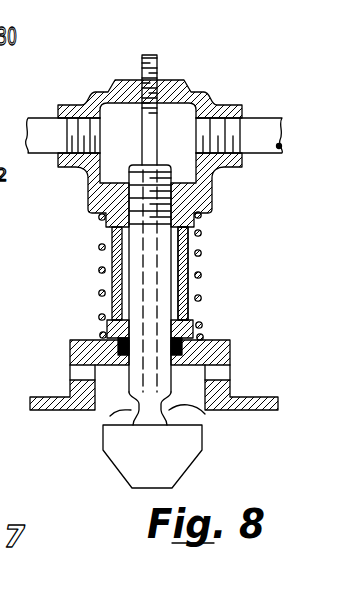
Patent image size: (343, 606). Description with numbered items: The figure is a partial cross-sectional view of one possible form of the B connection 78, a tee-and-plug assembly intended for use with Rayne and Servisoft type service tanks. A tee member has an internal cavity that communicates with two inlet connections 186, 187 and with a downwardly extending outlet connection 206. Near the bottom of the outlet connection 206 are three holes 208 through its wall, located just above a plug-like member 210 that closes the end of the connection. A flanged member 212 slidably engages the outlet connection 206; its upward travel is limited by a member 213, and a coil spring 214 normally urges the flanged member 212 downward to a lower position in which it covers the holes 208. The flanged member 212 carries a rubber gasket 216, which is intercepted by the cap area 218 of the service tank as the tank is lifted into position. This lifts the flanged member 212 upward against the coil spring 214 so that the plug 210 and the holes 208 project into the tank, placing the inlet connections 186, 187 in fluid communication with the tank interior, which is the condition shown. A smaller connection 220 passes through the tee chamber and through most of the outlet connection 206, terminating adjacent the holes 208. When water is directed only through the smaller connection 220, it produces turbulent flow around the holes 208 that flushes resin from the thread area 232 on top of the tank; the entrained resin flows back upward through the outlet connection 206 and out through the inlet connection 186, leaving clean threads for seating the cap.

The B connection 78 is at (290, 28).
The inlet connection 186 is at (53, 125).
The inlet connection 187 is at (247, 109).
The smaller connection 220 is at (158, 62).
The coil spring 214 is at (100, 247).
The member 213 is at (187, 265).
The outlet connection 206 is at (183, 292).
The flanged member 212 is at (106, 340).
The rubber gasket 216 is at (225, 378).
The cap area 218 is at (62, 398).
The thread area 232 is at (128, 410).
The holes 208 is at (205, 414).
The plug-like member 210 is at (195, 457).